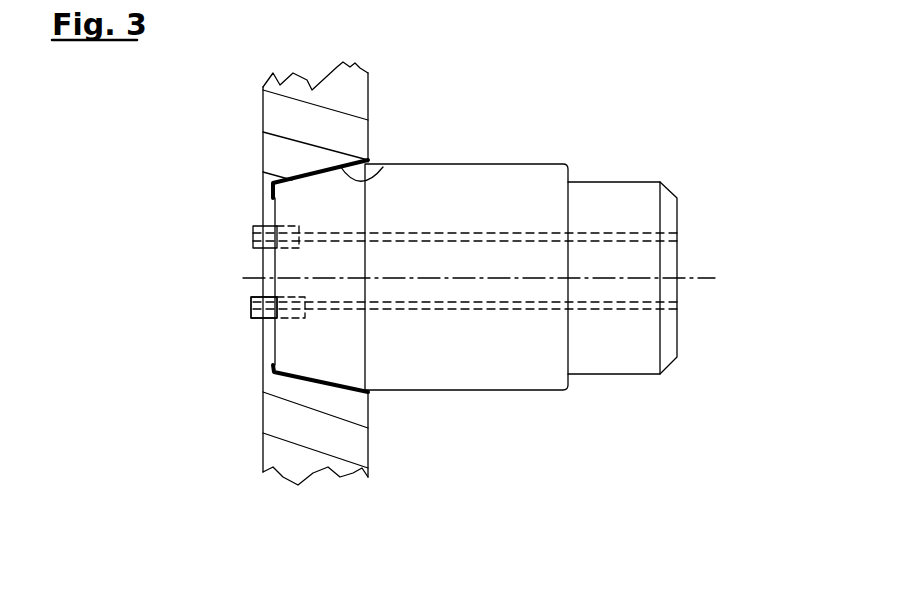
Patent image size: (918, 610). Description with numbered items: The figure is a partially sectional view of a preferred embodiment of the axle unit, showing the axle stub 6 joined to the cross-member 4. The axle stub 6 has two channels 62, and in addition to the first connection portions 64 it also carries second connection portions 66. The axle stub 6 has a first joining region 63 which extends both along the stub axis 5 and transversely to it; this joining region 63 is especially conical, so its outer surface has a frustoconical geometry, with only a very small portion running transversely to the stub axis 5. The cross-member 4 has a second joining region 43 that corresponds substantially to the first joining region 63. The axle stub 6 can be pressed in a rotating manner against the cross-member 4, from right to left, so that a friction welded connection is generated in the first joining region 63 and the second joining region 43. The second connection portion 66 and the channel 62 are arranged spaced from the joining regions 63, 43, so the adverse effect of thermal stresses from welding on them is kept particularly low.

The cross-member 4 is at (358, 443).
The second joining region 43 is at (303, 170).
The longitudinal axis 5 is at (693, 277).
The axle stub 6 is at (622, 367).
The channel 62 is at (593, 235).
The joining region 63 is at (383, 167).
The first connection portion 64 is at (680, 221).
The second connection portion 66 is at (262, 318).